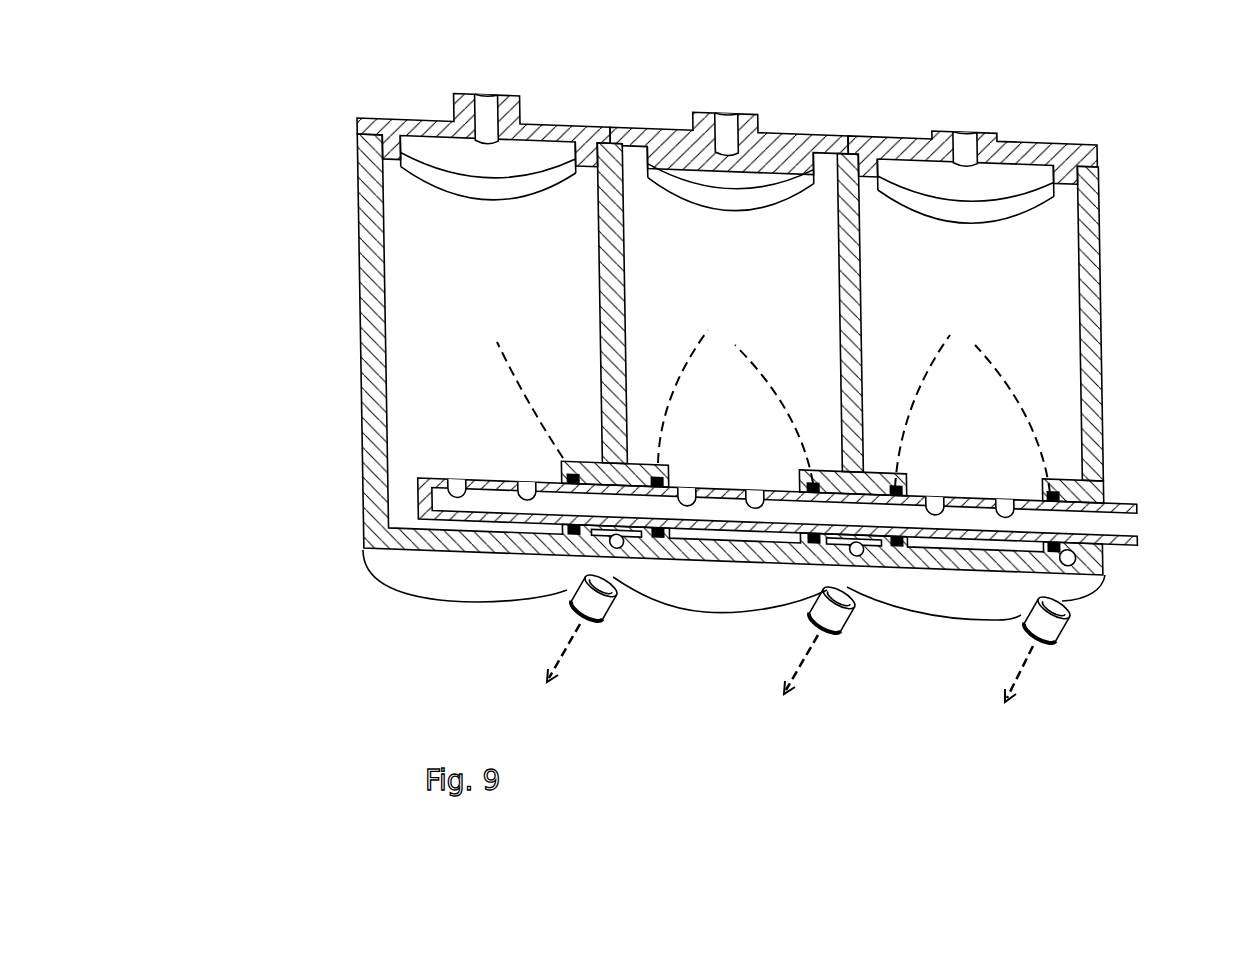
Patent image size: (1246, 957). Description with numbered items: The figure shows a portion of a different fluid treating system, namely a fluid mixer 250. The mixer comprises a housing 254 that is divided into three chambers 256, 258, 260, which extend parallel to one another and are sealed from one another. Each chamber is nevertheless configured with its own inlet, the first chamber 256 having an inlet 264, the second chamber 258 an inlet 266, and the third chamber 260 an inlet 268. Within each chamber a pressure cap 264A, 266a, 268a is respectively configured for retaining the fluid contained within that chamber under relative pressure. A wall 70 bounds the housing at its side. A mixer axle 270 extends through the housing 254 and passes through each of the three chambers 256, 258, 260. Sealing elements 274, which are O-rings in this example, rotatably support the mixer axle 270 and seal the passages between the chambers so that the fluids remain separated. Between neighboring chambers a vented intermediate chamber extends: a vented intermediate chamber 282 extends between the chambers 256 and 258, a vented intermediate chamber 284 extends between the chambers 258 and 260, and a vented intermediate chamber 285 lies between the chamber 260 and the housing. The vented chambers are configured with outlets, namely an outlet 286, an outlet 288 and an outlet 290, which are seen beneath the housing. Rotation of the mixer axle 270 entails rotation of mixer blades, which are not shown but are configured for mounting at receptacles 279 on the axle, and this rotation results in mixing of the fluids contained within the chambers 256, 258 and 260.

The fluid mixer 250 is at (963, 686).
The housing 254 is at (377, 432).
The chamber 256 is at (403, 313).
The chamber 258 is at (673, 257).
The chamber 260 is at (1060, 292).
The inlet 264 is at (487, 126).
The pressure cap 264A is at (420, 150).
The inlet 266 is at (727, 131).
The pressure cap 266a is at (773, 140).
The inlet 268 is at (965, 130).
The pressure cap 268a is at (1037, 152).
The housing side wall 70 is at (1096, 180).
The mixer axle 270 is at (1122, 500).
The sealing elements 274 is at (572, 470).
The receptacles 279 is at (457, 479).
The vented intermediate chamber 282 is at (641, 546).
The vented intermediate chamber 284 is at (822, 546).
The vented intermediate chamber 285 is at (1066, 566).
The outlet 286 is at (567, 607).
The outlet 288 is at (840, 614).
The outlet 290 is at (1052, 622).